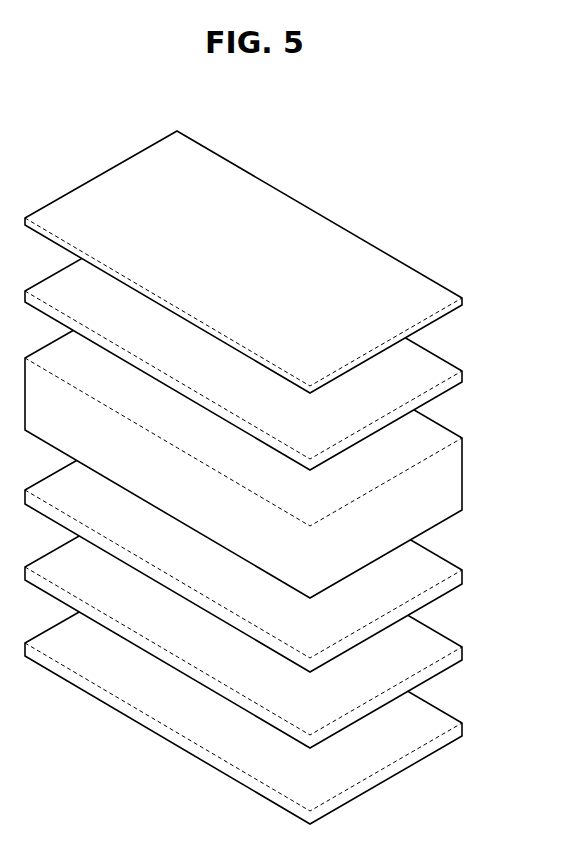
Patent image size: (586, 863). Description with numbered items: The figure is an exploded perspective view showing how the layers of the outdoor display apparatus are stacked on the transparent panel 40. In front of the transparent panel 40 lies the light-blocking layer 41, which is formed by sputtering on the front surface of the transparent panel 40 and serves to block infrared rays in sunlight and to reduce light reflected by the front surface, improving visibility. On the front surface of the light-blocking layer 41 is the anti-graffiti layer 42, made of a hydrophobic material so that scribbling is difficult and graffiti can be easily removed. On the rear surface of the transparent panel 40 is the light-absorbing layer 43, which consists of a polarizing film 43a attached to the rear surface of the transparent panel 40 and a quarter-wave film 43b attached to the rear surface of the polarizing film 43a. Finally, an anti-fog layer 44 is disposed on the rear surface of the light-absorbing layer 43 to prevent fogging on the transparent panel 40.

The anti-graffiti layer 42 is at (455, 306).
The light-blocking layer 41 is at (455, 379).
The transparent panel 40 is at (455, 447).
The light-absorbing layer 43 is at (521, 579).
The polarizing film 43a is at (455, 583).
The λ/4 film 43b is at (455, 660).
The anti-fog layer 44 is at (455, 735).